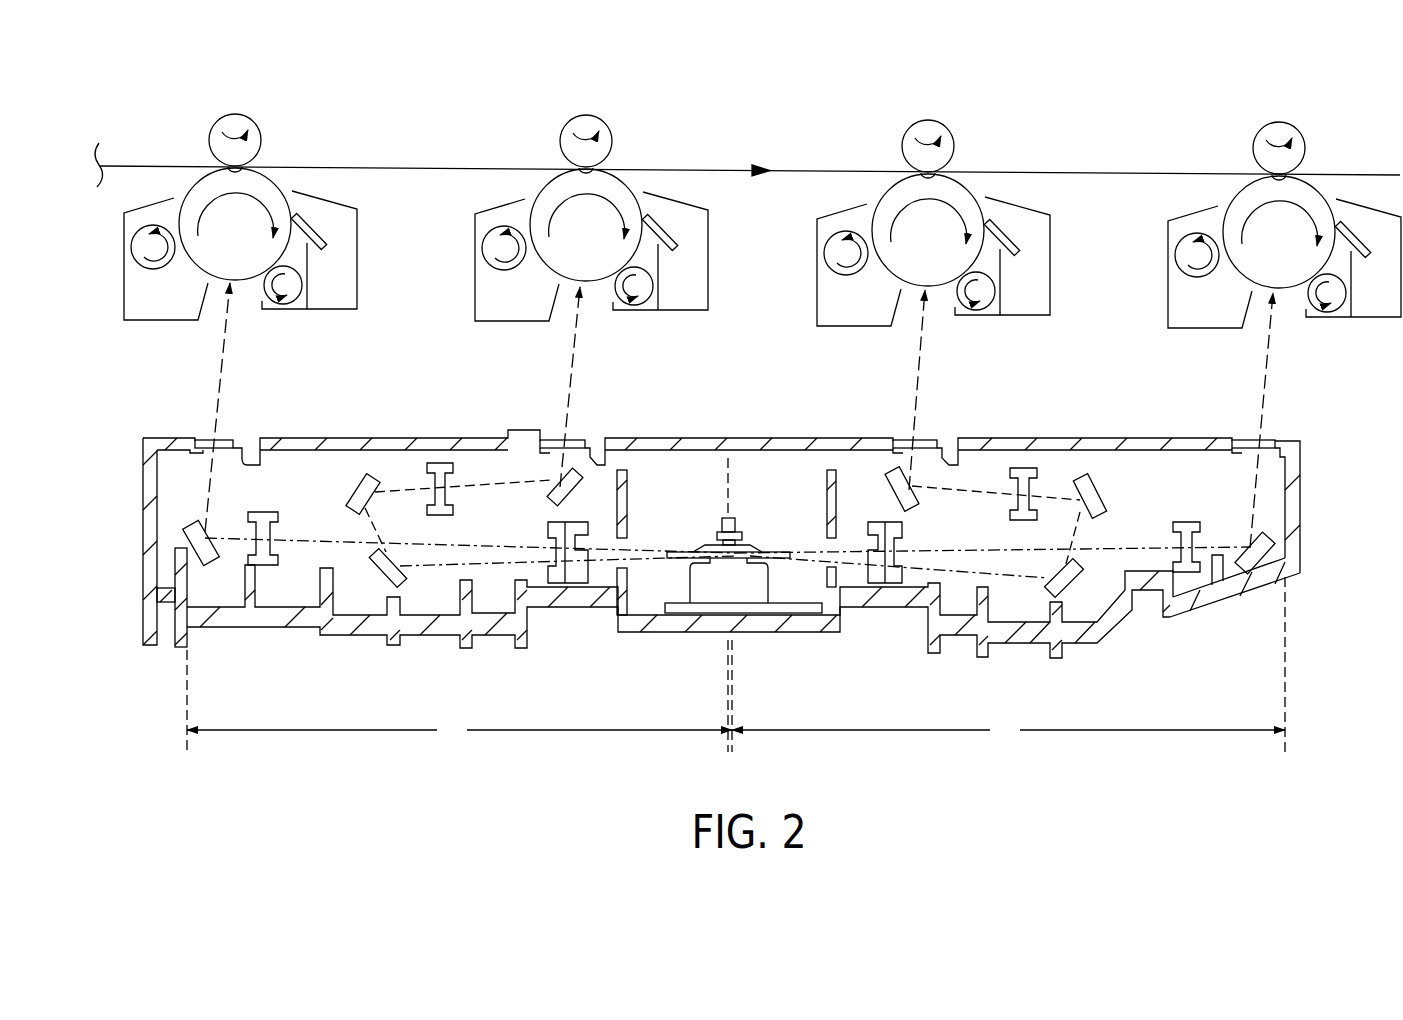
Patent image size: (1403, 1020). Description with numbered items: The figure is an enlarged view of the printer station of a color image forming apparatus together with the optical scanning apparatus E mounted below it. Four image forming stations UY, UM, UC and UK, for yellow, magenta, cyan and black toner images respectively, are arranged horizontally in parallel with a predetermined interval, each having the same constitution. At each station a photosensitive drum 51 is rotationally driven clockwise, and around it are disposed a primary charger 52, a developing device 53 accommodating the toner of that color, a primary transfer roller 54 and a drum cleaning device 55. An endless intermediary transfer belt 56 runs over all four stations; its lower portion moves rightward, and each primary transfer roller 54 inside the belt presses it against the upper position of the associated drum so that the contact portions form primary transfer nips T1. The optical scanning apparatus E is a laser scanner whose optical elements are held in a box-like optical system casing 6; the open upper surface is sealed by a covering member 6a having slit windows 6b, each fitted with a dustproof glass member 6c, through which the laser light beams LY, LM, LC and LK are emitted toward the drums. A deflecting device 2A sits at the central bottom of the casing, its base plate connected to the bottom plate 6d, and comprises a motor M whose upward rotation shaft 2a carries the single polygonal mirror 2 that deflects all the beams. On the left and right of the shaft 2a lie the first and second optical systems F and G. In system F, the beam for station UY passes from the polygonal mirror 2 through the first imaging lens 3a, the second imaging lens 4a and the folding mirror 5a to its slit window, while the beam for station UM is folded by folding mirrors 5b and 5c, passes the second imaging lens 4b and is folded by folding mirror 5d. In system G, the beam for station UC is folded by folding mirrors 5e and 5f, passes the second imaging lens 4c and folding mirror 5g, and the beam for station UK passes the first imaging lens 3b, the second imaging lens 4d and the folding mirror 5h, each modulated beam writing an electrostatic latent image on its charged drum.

The polygonal mirror 2 is at (752, 540).
The rotation shaft 2a is at (723, 517).
The deflecting device 2A is at (660, 598).
The first imaging lens 3a is at (568, 585).
The first imaging lens 3b is at (892, 585).
The second imaging lens 4a is at (265, 510).
The second imaging lens 4b is at (455, 509).
The second imaging lens 4c is at (1030, 466).
The second imaging lens 4d is at (1180, 528).
The folding mirror 5a is at (196, 522).
The folding mirror 5b is at (374, 560).
The folding mirror 5c is at (350, 490).
The folding mirror 5d is at (578, 493).
The folding mirror 5e is at (1072, 592).
The folding mirror 5f is at (1102, 481).
The folding mirror 5g is at (915, 500).
The folding mirror 5h is at (1249, 576).
The optical system casing 6 is at (1302, 497).
The covering member 6a is at (682, 437).
The slit window 6b is at (216, 460).
The dustproof glass member 6c is at (744, 415).
The bottom plate 6d is at (778, 634).
The photosensitive drum 51 is at (224, 260).
The primary charger 52 is at (281, 304).
The developing device 53 is at (154, 313).
The primary transfer roller 54 is at (233, 129).
The drum cleaning device 55 is at (318, 296).
The intermediary transfer belt 56 is at (733, 180).
The primary transfer nip T1 is at (252, 165).
The motor M is at (760, 593).
The optical scanning apparatus E is at (137, 610).
The first optical system F is at (459, 696).
The second optical system G is at (1008, 664).
The first image forming station UY is at (119, 312).
The second image forming station UM is at (470, 313).
The third image forming station UC is at (812, 318).
The fourth image forming station UK is at (1163, 320).
The laser light beam LY is at (218, 386).
The laser light beam LM is at (566, 388).
The laser light beam LC is at (910, 385).
The laser light beam LK is at (1260, 390).